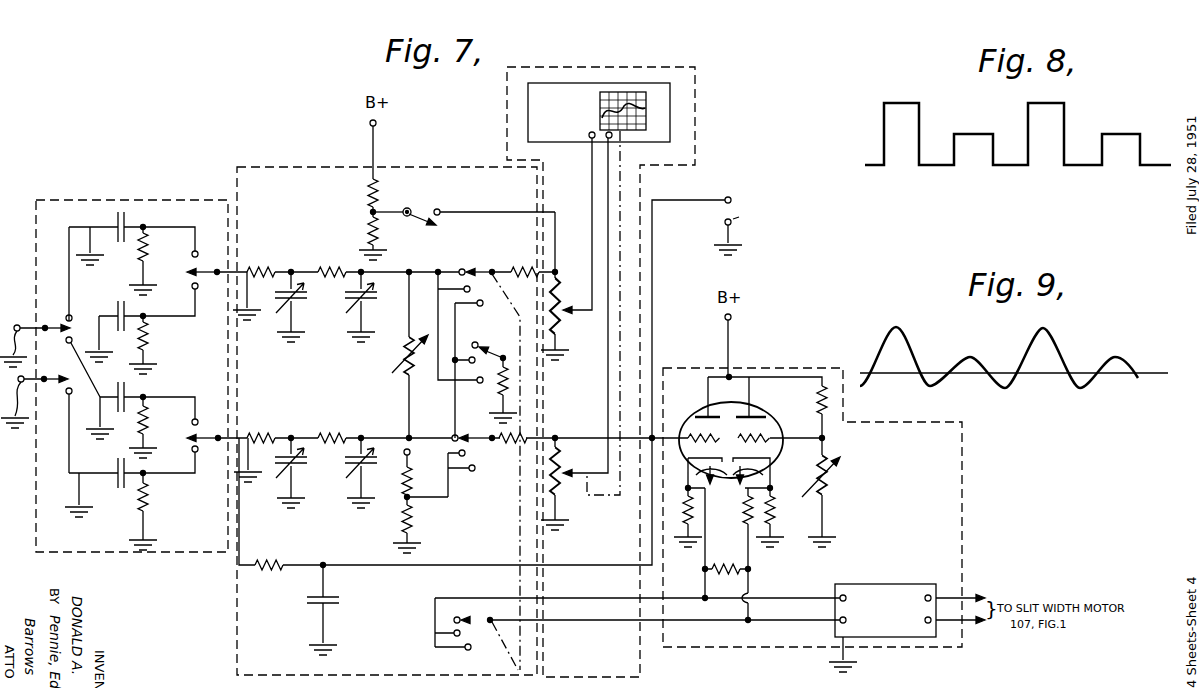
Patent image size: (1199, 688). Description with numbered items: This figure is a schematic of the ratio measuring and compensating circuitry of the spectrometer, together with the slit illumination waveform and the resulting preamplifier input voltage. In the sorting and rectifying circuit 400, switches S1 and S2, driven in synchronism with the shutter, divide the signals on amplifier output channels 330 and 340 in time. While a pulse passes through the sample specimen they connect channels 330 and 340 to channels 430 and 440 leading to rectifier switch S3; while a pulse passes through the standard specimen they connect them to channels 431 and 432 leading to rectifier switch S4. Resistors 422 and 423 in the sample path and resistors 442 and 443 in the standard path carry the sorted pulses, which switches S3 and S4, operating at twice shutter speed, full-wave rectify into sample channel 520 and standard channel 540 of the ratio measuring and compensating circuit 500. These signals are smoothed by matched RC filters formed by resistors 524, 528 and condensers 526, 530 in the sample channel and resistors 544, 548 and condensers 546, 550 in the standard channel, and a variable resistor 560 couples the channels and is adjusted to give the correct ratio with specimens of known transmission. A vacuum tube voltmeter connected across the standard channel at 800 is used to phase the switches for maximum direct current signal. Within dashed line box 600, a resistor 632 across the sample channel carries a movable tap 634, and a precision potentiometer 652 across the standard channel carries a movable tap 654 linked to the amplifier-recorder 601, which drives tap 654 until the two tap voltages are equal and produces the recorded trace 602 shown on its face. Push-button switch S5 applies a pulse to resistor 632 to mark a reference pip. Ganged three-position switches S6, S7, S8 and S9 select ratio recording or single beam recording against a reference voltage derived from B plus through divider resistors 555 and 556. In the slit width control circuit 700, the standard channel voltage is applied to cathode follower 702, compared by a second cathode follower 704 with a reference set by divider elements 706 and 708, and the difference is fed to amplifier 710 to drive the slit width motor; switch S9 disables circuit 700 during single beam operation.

The sorting and rectifying circuit 400 is at (107, 199).
The amplifier output channel 330 is at (21, 334).
The amplifier output channel 340 is at (21, 416).
The sorting switch S1 is at (56, 322).
The sorting switch S2 is at (55, 397).
The rectifier switch S3 is at (204, 268).
The rectifier switch S4 is at (205, 432).
The push-button switch S5 is at (463, 210).
The three-position switch S6 is at (470, 276).
The three-position switch S7 is at (471, 457).
The three-position switch S8 is at (487, 377).
The three-position switch S9 is at (476, 634).
The channel 430 is at (93, 242).
The channel 440 is at (140, 325).
The channel 431 is at (140, 410).
The channel 432 is at (130, 484).
The resistor 422 is at (158, 260).
The resistor 423 is at (160, 344).
The resistor 442 is at (148, 424).
The resistor 443 is at (160, 511).
The ratio measuring and compensating circuit 500 is at (257, 167).
The sample channel 520 is at (252, 312).
The resistor 524 is at (271, 258).
The condenser 526 is at (304, 306).
The resistor 528 is at (332, 259).
The condenser 530 is at (374, 306).
The standard channel 540 is at (254, 448).
The resistor 544 is at (274, 425).
The condenser 546 is at (300, 470).
The resistor 548 is at (340, 425).
The condenser 550 is at (375, 462).
The divider resistor 555 is at (425, 472).
The divider resistor 556 is at (411, 527).
The variable resistor 560 is at (409, 357).
The dashed line box 600 is at (703, 140).
The amplifier-recorder 601 is at (641, 83).
The oscilloscope trace 602 is at (625, 115).
The resistor 632 is at (566, 310).
The movable tap 634 is at (572, 316).
The precision potentiometer 652 is at (569, 483).
The movable tap 654 is at (572, 480).
The slit width control circuit 700 is at (968, 519).
The cathode follower 702 is at (686, 418).
The second cathode follower 704 is at (766, 423).
The resistance divider element 706 is at (829, 488).
The resistance divider element 708 is at (829, 401).
The amplifier 710 is at (883, 583).
The standard channel connection point 800 is at (743, 226).